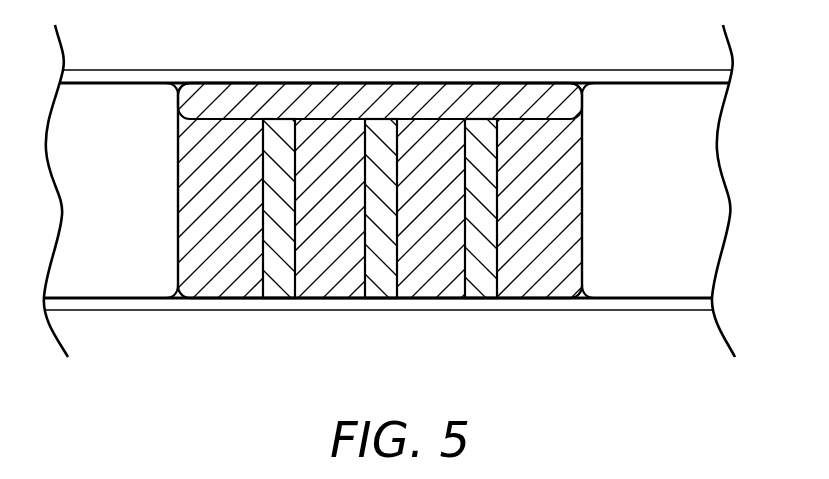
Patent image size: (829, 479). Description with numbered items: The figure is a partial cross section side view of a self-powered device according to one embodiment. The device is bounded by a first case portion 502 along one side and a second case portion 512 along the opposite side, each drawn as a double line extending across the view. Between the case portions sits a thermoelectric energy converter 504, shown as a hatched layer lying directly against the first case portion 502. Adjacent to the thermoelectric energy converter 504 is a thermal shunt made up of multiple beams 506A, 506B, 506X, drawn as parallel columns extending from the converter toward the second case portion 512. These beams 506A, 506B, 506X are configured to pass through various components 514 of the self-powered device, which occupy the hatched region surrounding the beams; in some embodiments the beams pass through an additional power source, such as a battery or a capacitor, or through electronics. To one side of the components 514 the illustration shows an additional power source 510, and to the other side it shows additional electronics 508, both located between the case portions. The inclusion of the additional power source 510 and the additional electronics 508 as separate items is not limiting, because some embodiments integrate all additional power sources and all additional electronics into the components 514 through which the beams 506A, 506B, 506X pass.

The first case portion 502 is at (297, 70).
The thermoelectric energy converter 504 is at (221, 88).
The beam 506A is at (278, 293).
The beam 506B is at (381, 295).
The beam 506X is at (482, 294).
The additional electronics 508 is at (647, 292).
The additional power source 510 is at (103, 292).
The second case portion 512 is at (193, 312).
The components 514 is at (568, 152).